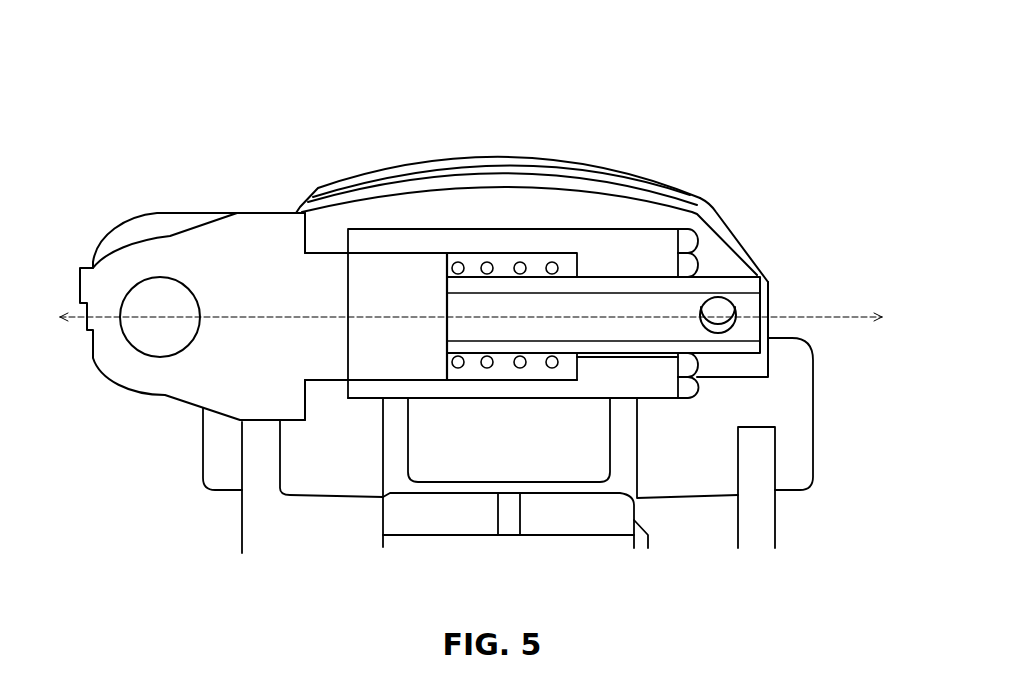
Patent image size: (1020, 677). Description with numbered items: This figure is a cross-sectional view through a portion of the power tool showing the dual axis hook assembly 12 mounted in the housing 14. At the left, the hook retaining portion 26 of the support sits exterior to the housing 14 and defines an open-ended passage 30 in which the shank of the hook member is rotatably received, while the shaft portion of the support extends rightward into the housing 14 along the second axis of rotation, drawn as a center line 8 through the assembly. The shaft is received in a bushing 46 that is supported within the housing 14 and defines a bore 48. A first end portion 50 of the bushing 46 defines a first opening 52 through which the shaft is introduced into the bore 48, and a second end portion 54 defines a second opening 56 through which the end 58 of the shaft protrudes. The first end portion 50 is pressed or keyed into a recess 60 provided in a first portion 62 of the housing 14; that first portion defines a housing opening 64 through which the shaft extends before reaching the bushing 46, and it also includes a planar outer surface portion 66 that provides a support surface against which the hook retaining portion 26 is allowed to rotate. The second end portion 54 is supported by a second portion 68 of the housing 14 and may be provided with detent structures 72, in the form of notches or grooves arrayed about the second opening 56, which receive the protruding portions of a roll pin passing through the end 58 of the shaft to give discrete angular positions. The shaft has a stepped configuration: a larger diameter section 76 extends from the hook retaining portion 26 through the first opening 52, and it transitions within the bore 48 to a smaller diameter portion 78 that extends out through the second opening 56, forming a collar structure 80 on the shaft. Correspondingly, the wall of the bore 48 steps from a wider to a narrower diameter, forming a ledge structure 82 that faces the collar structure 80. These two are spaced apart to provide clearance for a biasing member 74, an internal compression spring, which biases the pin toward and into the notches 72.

The longitudinal axis 8 is at (823, 320).
The dual axis hook assembly 12 is at (181, 86).
The housing 14 is at (615, 167).
The hook retaining portion 26 is at (140, 225).
The open-ended passage 30 is at (142, 352).
The bushing 46 is at (495, 400).
The bore 48 is at (532, 372).
The first end portion 50 is at (353, 400).
The first opening 52 is at (358, 281).
The second end portion 54 is at (668, 400).
The second opening 56 is at (680, 284).
The end of the shaft 58 is at (733, 355).
The recess 60 is at (368, 240).
The first portion of the housing 62 is at (355, 175).
The upper shoulder 64 is at (303, 262).
The planar outer surface portion 66 is at (303, 407).
The second portion of the housing 68 is at (685, 188).
The detent structures 72 is at (693, 372).
The biasing member 74 is at (567, 350).
The larger diameter section 76 is at (393, 385).
The smaller diameter portion 78 is at (624, 277).
The collar structure 80 is at (450, 370).
The ledge structure 82 is at (570, 380).